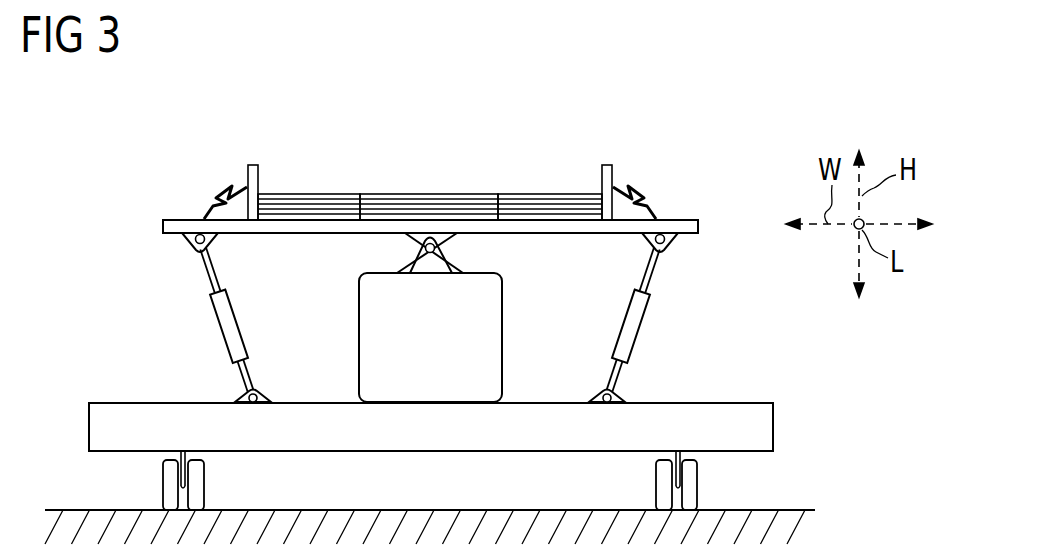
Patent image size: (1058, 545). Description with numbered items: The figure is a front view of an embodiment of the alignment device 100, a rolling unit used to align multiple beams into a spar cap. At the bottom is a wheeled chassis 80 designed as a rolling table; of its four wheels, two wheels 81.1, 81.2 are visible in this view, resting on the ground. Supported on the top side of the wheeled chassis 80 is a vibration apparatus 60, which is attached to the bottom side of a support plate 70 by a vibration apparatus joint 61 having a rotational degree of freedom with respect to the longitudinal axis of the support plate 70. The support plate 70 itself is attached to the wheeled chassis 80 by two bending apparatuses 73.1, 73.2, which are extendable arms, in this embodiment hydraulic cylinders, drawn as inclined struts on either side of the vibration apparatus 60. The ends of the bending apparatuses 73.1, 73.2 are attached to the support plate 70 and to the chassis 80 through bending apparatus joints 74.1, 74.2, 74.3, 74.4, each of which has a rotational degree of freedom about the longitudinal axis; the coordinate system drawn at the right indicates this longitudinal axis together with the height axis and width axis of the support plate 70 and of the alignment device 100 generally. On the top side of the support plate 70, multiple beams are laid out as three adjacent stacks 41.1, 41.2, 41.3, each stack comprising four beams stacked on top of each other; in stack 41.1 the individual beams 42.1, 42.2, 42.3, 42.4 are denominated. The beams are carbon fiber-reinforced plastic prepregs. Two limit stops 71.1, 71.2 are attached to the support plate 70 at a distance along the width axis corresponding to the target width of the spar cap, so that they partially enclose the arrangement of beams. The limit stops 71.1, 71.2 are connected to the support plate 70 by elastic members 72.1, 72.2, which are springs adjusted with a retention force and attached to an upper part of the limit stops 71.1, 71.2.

The alignment device 100 is at (750, 147).
The support plate 70 is at (164, 226).
The limit stop 71.1 is at (251, 164).
The limit stop 71.2 is at (607, 164).
The stack 41.1 is at (333, 175).
The stack 41.2 is at (447, 175).
The stack 41.3 is at (545, 175).
The beam 42.1 is at (353, 206).
The beam 42.2 is at (283, 200).
The beam 42.3 is at (296, 210).
The beam 42.4 is at (335, 214).
The elastic member 72.1 is at (226, 200).
The elastic member 72.2 is at (634, 200).
The bending apparatus joint 74.1 is at (187, 240).
The bending apparatus joint 74.2 is at (673, 240).
The bending apparatus joint 74.3 is at (238, 401).
The bending apparatus joint 74.4 is at (622, 401).
The bending apparatus 73.1 is at (208, 274).
The bending apparatus 73.2 is at (652, 274).
The vibration apparatus 60 is at (503, 341).
The vibration apparatus joint 61 is at (450, 266).
The wheeled chassis 80 is at (90, 427).
The wheel 81.1 is at (162, 483).
The wheel 81.2 is at (698, 483).